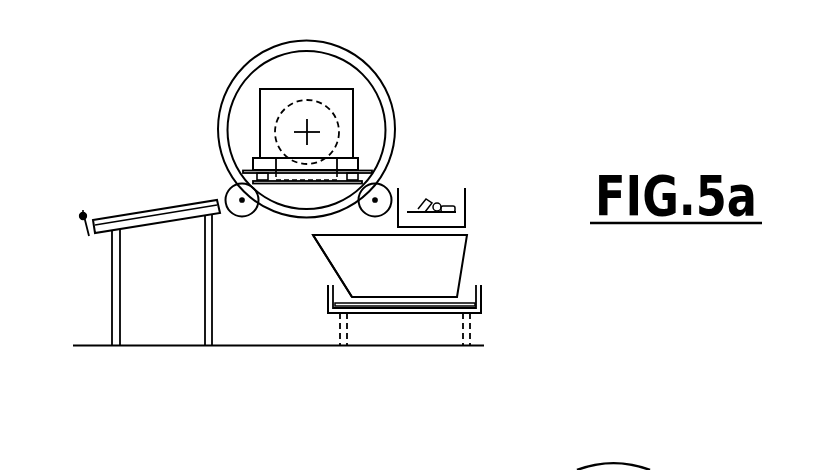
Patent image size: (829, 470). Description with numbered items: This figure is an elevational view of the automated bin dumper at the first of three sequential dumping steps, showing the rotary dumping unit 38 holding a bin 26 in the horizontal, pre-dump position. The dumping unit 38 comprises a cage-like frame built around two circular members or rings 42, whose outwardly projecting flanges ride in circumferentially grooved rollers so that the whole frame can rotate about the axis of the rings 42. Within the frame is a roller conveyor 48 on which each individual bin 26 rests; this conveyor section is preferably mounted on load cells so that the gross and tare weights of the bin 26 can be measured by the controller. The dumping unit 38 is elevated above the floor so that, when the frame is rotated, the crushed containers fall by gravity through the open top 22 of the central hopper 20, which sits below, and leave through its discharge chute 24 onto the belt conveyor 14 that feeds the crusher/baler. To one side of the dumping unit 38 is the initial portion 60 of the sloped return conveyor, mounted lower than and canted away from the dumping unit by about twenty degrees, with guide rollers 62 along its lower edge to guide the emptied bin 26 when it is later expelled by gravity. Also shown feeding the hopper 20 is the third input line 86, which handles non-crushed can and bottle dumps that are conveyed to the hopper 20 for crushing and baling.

The rotary dumping unit 38 is at (151, 71).
The circular members or rings 42 is at (319, 47).
The bin 26 is at (357, 116).
The roller conveyor 48 is at (283, 176).
The initial portion of second conveyor means 60 is at (160, 217).
The guide rollers 62 is at (81, 219).
The third input line 86 is at (459, 198).
The central hopper 20 is at (415, 283).
The open top 22 is at (347, 235).
The belt conveyor 14 is at (464, 300).
The discharge chute 24 is at (413, 300).